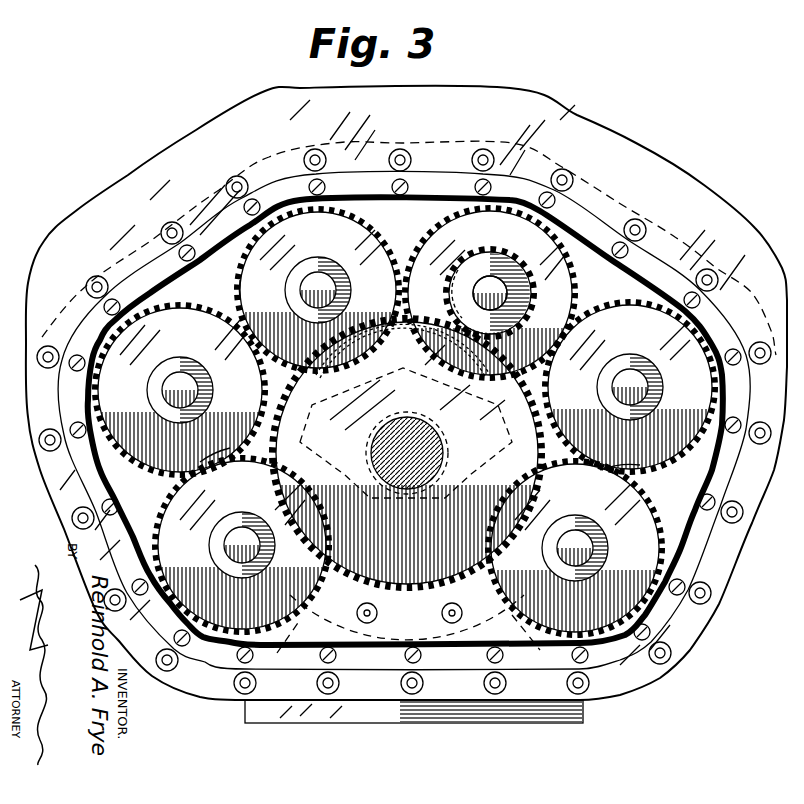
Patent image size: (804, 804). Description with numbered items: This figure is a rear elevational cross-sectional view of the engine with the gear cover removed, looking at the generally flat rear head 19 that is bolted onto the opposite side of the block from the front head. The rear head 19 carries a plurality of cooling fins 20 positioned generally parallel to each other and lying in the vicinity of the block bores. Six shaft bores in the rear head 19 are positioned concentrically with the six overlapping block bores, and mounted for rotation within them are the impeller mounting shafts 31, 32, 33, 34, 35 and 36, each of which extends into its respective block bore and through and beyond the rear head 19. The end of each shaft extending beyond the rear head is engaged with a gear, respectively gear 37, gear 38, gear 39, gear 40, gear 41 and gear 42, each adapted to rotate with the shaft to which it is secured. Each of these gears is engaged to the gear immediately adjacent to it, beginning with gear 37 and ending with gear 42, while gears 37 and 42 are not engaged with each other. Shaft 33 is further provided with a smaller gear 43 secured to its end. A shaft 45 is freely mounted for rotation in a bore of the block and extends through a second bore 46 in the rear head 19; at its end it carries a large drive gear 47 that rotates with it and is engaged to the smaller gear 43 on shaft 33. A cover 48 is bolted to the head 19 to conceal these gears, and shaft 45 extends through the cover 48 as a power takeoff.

The rear head 19 is at (685, 467).
The cooling fins 20 is at (692, 200).
The impeller mounting shaft 31 is at (573, 556).
The impeller mounting shaft 32 is at (630, 380).
The impeller mounting shaft 33 is at (532, 288).
The impeller mounting shaft 34 is at (318, 290).
The impeller mounting shaft 35 is at (180, 388).
The impeller mounting shaft 36 is at (242, 543).
The gear 37 is at (465, 613).
The gear 38 is at (640, 458).
The gear 39 is at (428, 238).
The gear 40 is at (248, 291).
The gear 41 is at (163, 468).
The gear 42 is at (300, 598).
The smaller gear 43 is at (488, 272).
The shaft 45 is at (433, 433).
The second bore 46 is at (408, 497).
The large drive gear 47 is at (407, 592).
The cover 48 is at (683, 540).